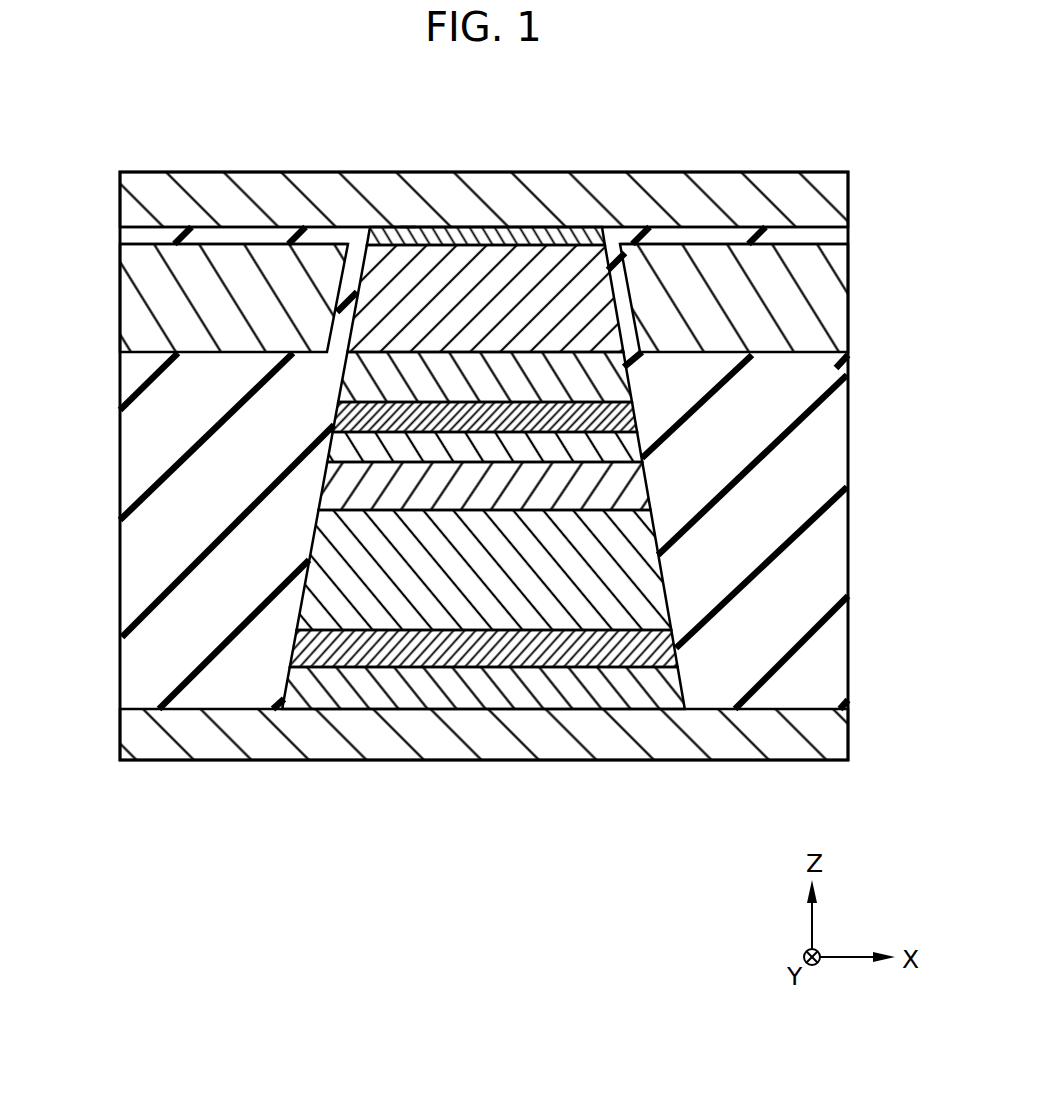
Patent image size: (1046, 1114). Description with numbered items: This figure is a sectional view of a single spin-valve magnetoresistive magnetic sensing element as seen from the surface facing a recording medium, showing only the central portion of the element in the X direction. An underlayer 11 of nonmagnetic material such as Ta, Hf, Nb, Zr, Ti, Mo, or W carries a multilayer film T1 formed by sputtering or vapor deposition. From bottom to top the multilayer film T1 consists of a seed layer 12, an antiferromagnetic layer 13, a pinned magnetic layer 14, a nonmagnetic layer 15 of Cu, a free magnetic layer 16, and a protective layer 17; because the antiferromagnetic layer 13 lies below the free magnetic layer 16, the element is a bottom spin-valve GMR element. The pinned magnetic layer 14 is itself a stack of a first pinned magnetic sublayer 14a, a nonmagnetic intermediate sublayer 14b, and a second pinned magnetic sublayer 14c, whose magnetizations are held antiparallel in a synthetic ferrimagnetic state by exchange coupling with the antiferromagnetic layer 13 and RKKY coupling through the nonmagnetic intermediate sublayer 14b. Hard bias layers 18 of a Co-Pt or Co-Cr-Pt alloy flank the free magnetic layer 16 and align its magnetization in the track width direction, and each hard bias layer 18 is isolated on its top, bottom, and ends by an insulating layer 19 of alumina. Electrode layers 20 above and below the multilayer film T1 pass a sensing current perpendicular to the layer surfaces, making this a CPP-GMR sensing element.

The underlayer 11 is at (658, 688).
The seed layer 12 is at (612, 657).
The antiferromagnetic layer 13 is at (562, 597).
The pinned magnetic layer 14 is at (454, 638).
The first pinned magnetic sublayer 14a is at (355, 484).
The nonmagnetic intermediate sublayer 14b is at (389, 448).
The second pinned magnetic sublayer 14c is at (430, 420).
The nonmagnetic layer 15 is at (529, 367).
The free magnetic layer 16 is at (470, 273).
The protective layer 17 is at (573, 222).
The hard bias layer 18 is at (138, 322).
The insulating layer 19 is at (138, 232).
The electrode layer 20 is at (835, 194).
The multilayer film T1 is at (408, 218).